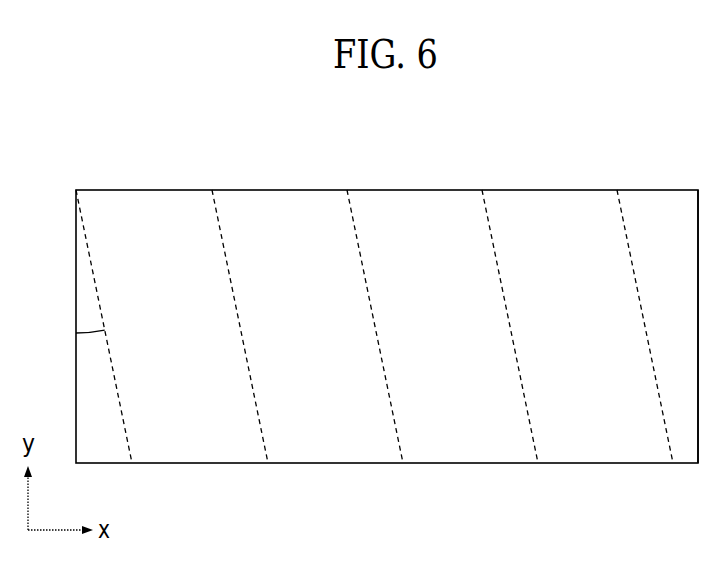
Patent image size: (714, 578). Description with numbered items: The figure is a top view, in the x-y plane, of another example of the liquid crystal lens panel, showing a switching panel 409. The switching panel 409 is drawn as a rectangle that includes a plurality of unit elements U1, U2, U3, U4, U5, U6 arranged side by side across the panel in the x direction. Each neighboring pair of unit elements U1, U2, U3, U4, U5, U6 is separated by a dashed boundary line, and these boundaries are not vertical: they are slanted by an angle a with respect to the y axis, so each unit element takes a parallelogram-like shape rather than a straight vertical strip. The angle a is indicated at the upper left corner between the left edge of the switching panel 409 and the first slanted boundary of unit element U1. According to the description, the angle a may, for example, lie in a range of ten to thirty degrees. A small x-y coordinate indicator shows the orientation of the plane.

The switching panel 409 is at (405, 190).
The unit element U1 is at (104, 326).
The unit element U2 is at (215, 326).
The unit element U3 is at (350, 326).
The unit element U4 is at (485, 326).
The unit element U5 is at (620, 326).
The unit element U6 is at (679, 326).
The angle a is at (90, 347).